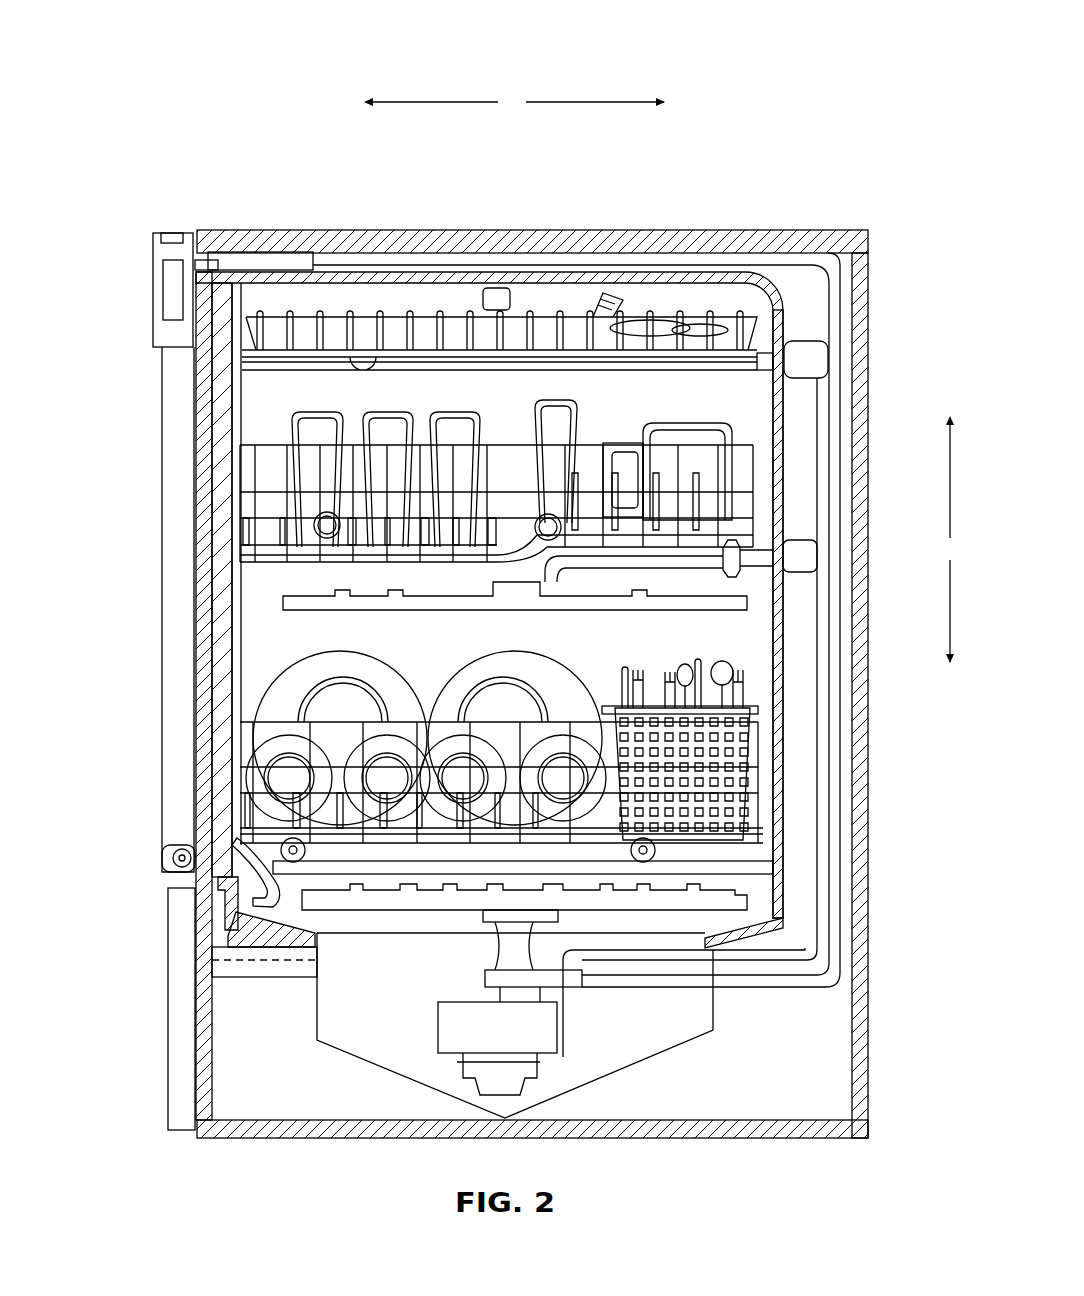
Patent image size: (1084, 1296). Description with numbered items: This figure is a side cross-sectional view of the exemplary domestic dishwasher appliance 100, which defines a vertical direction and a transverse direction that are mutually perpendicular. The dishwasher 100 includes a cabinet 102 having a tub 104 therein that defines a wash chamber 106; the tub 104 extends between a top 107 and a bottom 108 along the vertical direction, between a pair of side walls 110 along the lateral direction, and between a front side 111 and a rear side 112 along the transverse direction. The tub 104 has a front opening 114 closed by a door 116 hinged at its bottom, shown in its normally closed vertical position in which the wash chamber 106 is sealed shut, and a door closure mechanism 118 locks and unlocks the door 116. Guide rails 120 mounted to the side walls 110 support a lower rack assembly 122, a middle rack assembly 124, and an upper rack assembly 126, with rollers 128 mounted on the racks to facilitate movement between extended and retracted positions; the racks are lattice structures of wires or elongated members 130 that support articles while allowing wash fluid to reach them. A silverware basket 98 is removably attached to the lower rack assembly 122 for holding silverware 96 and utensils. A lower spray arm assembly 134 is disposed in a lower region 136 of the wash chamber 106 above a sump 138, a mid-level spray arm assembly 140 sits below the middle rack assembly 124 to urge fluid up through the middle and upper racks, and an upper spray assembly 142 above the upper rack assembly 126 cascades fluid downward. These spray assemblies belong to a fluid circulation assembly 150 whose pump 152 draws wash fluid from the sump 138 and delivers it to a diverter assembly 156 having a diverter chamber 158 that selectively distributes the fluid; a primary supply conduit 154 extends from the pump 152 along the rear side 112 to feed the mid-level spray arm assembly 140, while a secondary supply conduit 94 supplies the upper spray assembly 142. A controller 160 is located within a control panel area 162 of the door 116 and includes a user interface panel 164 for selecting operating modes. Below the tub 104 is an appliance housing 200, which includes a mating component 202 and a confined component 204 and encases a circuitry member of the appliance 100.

The dishwasher appliance 100 is at (782, 88).
The secondary supply conduit 94 is at (841, 350).
The silverware 96 is at (618, 306).
The silverware basket 98 is at (740, 740).
The cabinet 102 is at (866, 284).
The tub 104 is at (367, 651).
The wash chamber 106 is at (248, 674).
The top 107 is at (378, 283).
The bottom 108 is at (770, 925).
The side walls 110 is at (453, 298).
The front side 111 is at (250, 305).
The rear side 112 is at (770, 405).
The front opening 114 is at (207, 277).
The door 116 is at (165, 752).
The door closure mechanism 118 is at (280, 256).
The guide rails 120 is at (257, 443).
The lower rack assembly 122 is at (653, 704).
The middle rack assembly 124 is at (281, 439).
The upper rack assembly 126 is at (419, 287).
The rollers 128 is at (300, 415).
The elongated members 130 is at (740, 497).
The lower spray arm assembly 134 is at (670, 912).
The lower region 136 is at (762, 846).
The sump 138 is at (317, 974).
The mid-level spray arm assembly 140 is at (570, 597).
The upper spray assembly 142 is at (543, 302).
The fluid circulation assembly 150 is at (411, 1020).
The pump 152 is at (527, 1040).
The primary supply conduit 154 is at (824, 741).
The diverter assembly 156 is at (470, 975).
The diverter chamber 158 is at (582, 983).
The controller 160 is at (150, 285).
The control panel area 162 is at (171, 226).
The user interface panel 164 is at (192, 228).
The appliance housing 200 is at (240, 977).
The mating component 202 is at (218, 939).
The confined component 204 is at (267, 962).